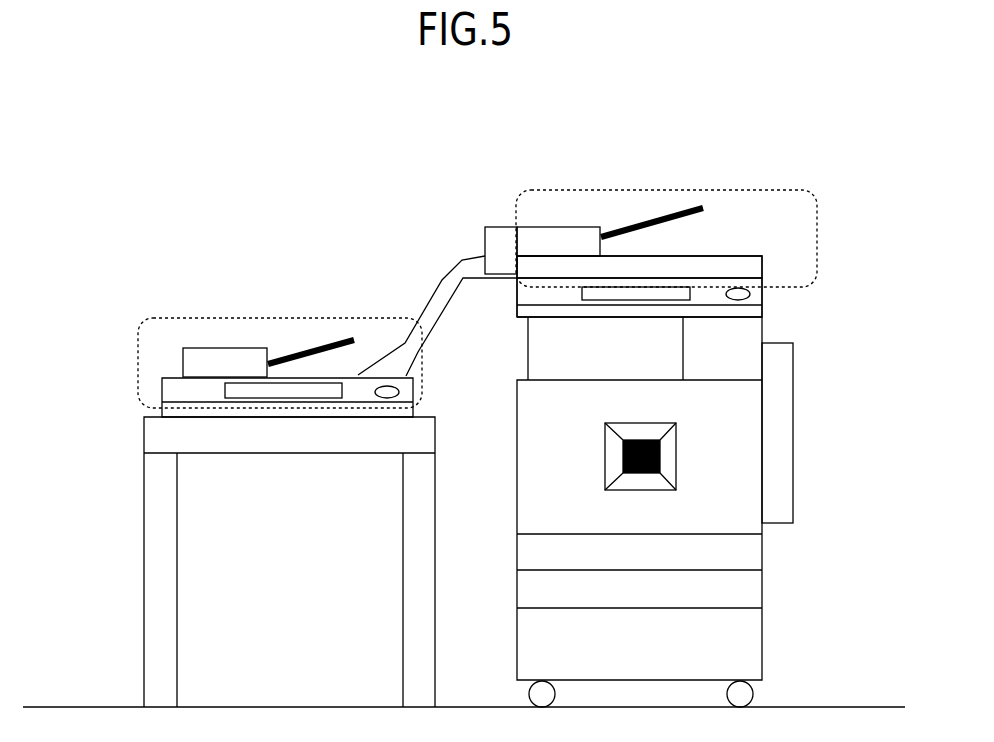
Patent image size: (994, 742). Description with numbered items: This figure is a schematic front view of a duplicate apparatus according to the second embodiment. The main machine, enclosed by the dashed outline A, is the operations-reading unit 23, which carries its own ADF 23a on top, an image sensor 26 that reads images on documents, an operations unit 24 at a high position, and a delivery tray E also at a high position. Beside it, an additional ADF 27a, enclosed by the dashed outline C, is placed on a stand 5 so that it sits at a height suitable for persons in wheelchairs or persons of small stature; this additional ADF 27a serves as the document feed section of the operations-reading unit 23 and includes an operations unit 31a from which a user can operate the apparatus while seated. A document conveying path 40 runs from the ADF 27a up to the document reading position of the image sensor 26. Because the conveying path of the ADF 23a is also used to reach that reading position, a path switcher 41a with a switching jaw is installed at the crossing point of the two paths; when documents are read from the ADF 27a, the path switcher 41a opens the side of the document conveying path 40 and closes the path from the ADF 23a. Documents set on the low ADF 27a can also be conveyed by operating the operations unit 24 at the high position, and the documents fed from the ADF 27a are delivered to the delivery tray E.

The stand 5 is at (144, 540).
The image reading device C is at (137, 350).
The ADF 27a is at (202, 318).
The operations unit 31a is at (223, 389).
The document conveying path 40 is at (431, 300).
The path switcher 41a is at (502, 227).
The image forming apparatus A is at (800, 190).
The delivery tray E is at (663, 250).
The ADF 23a is at (553, 240).
The operations-reading unit 23 is at (675, 190).
The image sensor 26 is at (763, 311).
The operations unit 24 is at (673, 293).